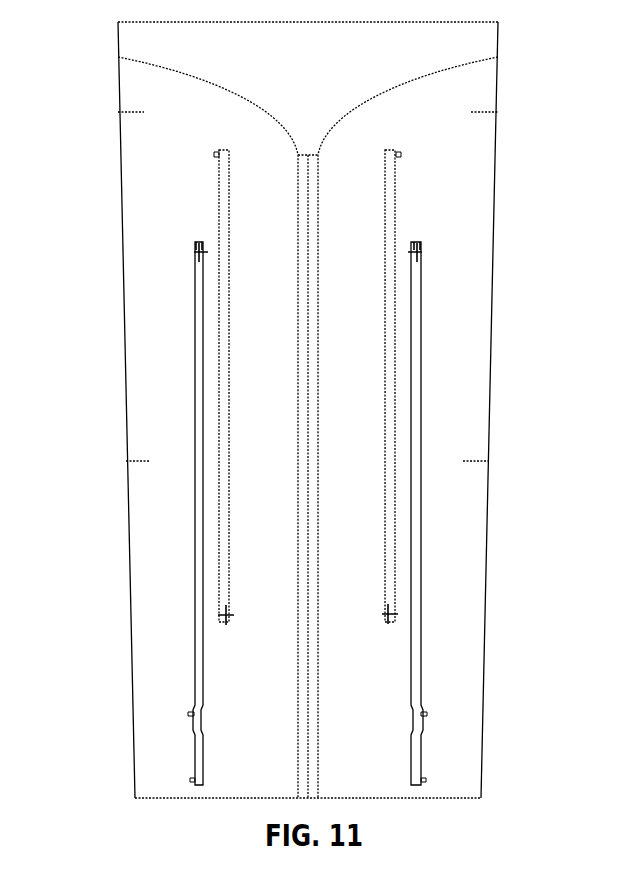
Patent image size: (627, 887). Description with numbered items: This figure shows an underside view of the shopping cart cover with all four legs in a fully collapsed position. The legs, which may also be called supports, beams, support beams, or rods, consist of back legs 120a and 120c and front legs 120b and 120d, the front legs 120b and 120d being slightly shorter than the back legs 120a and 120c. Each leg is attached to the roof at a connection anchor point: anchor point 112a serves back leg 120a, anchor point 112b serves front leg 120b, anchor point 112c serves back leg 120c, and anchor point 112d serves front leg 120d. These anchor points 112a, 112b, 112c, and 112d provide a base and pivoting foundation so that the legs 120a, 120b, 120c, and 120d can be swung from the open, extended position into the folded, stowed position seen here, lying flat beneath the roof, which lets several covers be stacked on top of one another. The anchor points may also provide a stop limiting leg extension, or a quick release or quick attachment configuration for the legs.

The back leg 120a is at (197, 443).
The front leg 120b is at (221, 182).
The back leg 120c is at (417, 435).
The front leg 120d is at (396, 182).
The connection anchor point 112a is at (193, 252).
The connection anchor point 112b is at (222, 615).
The connection anchor point 112c is at (425, 252).
The connection anchor point 112d is at (393, 614).